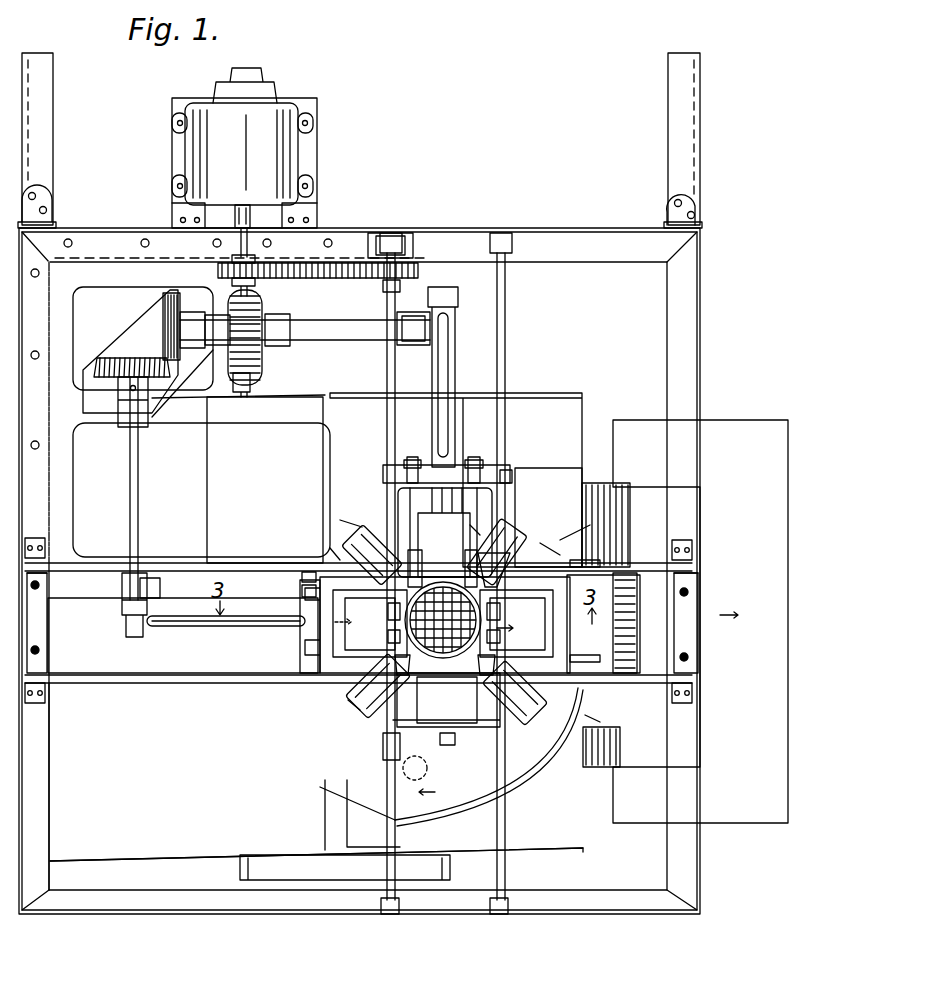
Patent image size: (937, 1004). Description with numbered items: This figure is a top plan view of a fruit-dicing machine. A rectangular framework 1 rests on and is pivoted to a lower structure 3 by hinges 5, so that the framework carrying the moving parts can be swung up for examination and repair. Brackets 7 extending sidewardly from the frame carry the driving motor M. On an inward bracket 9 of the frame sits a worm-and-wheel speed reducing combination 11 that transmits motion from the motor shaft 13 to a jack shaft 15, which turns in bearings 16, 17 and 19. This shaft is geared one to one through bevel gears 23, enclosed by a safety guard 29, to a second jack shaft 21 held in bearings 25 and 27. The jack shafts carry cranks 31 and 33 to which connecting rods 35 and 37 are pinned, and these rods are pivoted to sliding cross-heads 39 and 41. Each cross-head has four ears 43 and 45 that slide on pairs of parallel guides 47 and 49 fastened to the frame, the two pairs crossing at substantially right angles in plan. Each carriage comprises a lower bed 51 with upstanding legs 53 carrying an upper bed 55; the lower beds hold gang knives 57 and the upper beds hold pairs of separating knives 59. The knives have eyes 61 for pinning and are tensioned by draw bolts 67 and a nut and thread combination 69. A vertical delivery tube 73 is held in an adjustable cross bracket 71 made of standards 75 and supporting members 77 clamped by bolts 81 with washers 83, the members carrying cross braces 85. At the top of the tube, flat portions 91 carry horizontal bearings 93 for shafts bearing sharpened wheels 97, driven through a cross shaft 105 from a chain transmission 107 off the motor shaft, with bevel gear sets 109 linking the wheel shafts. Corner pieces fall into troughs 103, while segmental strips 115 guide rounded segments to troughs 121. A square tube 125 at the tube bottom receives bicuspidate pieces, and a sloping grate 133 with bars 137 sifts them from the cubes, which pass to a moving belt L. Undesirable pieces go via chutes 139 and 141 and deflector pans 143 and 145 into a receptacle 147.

The rectangular framework 1 is at (563, 240).
The lower structure 3 is at (48, 133).
The pivoting hinges 5 is at (40, 207).
The brackets 7 is at (175, 160).
The driving motor M is at (262, 128).
The inward bracket 9 is at (78, 283).
The worm-and-wheel speed reducing combination 11 is at (280, 343).
The motor shaft 13 is at (282, 238).
The jack shaft 15 is at (348, 330).
The bearing 16 is at (207, 345).
The bearing 17 is at (283, 318).
The bearing 19 is at (392, 349).
The second jack shaft 21 is at (130, 500).
The bevel gears 23 is at (162, 337).
The bearing 25 is at (150, 578).
The bearing 27 is at (138, 420).
The safety guard 29 is at (120, 343).
The crank 31 is at (125, 620).
The crank 33 is at (430, 317).
The connecting rod 35 is at (190, 627).
The connecting rod 37 is at (448, 375).
The cross-head 39 is at (305, 655).
The cross-head 41 is at (470, 490).
The ears 43 is at (333, 553).
The ears 45 is at (395, 483).
The guides 47 is at (238, 563).
The guides 49 is at (390, 805).
The lower horizontal bed 51 is at (415, 768).
The supporting legs 53 is at (508, 488).
The upper horizontal bed 55 is at (425, 468).
The gang knives 57 is at (445, 532).
The separating knives 59 is at (472, 525).
The eyes 61 is at (392, 758).
The draw bolts 67 is at (392, 608).
The nut and thread combination 69 is at (468, 466).
The adjustable cross bracket 71 is at (114, 688).
The vertical delivery tube 73 is at (440, 572).
The standards 75 is at (45, 548).
The supporting members 77 is at (37, 633).
The clamping bolts 81 is at (42, 585).
The washers 83 is at (37, 600).
The cross braces 85 is at (210, 563).
The flat portions 91 is at (405, 630).
The horizontal bearing 93 is at (495, 619).
The sharpened wheels 97 is at (397, 556).
The troughs 103 is at (360, 527).
The cross shaft 105 is at (388, 430).
The chain transmission 107 is at (345, 265).
The bevel gear sets 109 is at (600, 565).
The segmentally sectioned strips 115 is at (500, 640).
The troughs 121 is at (620, 640).
The square tube 125 is at (402, 690).
The sloping grate 133 is at (640, 560).
The bars 137 is at (628, 615).
The receiving chute 139 is at (430, 806).
The chute 141 is at (568, 478).
The deflector pan 143 is at (593, 840).
The deflector pan 145 is at (165, 843).
The receptacle 147 is at (295, 863).
The moving belt L is at (700, 621).